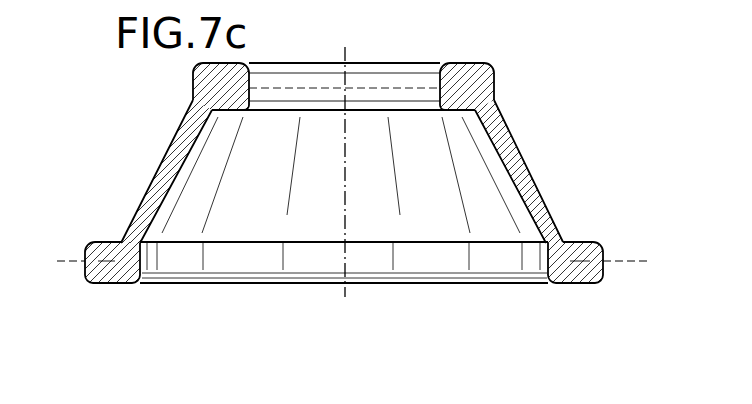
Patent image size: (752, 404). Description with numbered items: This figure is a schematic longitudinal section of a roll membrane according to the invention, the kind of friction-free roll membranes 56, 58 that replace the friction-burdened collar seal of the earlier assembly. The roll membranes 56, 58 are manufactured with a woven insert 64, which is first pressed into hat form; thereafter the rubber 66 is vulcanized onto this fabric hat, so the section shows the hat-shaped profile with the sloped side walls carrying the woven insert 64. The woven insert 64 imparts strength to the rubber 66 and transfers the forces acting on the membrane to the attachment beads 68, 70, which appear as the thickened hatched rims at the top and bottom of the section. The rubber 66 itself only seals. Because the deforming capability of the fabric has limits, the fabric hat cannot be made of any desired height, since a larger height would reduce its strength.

The attachment bead 70 is at (196, 80).
The roll membrane 56 is at (518, 140).
The roll membrane 58 is at (176, 171).
The attachment bead 68 is at (104, 246).
The rubber 66 is at (590, 241).
The woven insert 64 is at (617, 258).